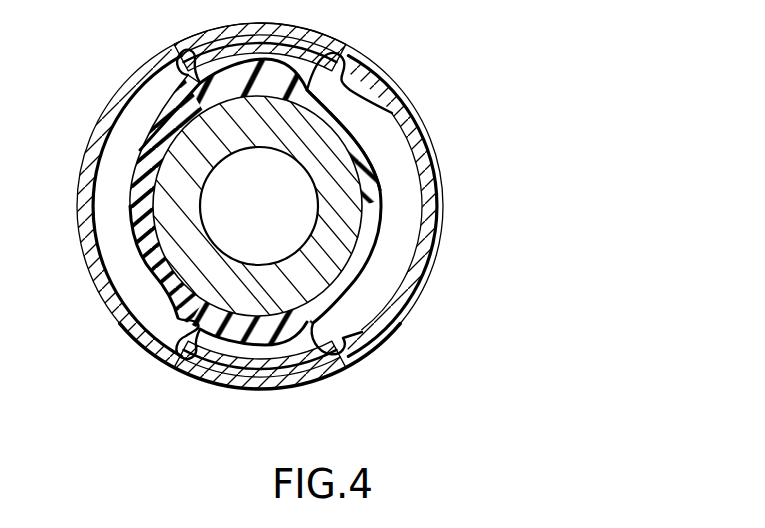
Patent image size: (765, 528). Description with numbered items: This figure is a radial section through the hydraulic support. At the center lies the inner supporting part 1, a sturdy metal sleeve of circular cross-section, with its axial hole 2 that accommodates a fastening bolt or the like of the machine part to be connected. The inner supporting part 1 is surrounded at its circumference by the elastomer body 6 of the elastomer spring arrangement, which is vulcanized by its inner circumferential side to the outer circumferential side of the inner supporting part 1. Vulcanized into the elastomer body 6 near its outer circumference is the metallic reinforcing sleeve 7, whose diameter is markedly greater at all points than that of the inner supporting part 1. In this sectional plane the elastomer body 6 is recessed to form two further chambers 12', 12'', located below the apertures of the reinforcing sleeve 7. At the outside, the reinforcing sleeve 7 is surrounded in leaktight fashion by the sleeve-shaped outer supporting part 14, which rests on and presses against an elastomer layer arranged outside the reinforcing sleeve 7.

The inner supporting part 1 is at (340, 108).
The axial hole 2 is at (212, 230).
The elastomer body 6 is at (370, 157).
The reinforcing sleeve 7 is at (263, 357).
The chamber 12' is at (103, 206).
The chamber 12'' is at (419, 206).
The outer supporting part 14 is at (387, 330).